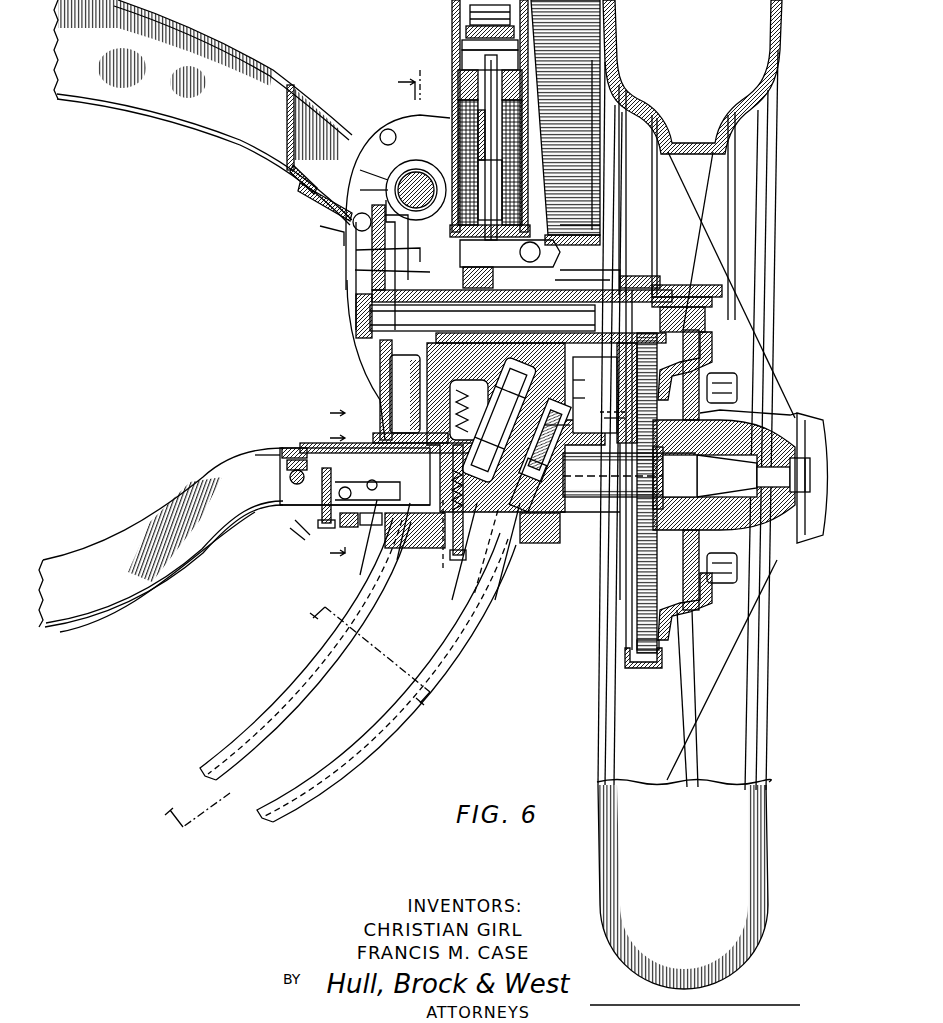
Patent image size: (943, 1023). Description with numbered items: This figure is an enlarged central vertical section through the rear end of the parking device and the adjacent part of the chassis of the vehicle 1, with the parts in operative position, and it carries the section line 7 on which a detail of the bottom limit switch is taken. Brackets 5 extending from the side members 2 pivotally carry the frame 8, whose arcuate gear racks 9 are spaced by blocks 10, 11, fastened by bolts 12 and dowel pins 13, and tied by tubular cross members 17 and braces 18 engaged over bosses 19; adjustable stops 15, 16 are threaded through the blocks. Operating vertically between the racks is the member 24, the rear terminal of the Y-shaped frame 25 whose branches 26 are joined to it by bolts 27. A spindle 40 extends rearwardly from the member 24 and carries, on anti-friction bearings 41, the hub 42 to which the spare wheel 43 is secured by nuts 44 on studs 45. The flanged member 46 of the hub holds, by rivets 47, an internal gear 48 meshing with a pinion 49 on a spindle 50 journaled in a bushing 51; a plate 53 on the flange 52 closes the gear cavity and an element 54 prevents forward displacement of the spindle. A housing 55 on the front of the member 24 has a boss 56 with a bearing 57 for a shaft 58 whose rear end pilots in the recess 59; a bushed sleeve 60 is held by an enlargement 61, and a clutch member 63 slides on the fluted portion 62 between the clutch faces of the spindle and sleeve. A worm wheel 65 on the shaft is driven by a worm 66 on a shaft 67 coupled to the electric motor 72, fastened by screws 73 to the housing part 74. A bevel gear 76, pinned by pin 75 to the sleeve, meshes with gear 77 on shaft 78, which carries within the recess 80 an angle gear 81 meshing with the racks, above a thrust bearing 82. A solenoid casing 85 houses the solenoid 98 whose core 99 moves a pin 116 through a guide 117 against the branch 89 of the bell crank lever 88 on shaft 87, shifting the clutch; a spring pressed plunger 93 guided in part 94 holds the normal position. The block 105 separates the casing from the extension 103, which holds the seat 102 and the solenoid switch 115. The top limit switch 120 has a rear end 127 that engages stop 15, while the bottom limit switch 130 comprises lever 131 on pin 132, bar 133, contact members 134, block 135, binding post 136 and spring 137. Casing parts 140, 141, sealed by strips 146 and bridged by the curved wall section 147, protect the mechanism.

The vehicle 1 is at (78, 103).
The side members of the frame 2 is at (243, 123).
The arms or brackets 5 is at (318, 208).
The part of the housing 74 is at (322, 232).
The electric motor 72 is at (399, 116).
The screws 73 is at (382, 131).
The housing 55 is at (400, 172).
The worm 66 is at (360, 170).
The worm shaft 67 is at (360, 186).
The forwardly extending branch 89 is at (361, 214).
The top limit switch 120 is at (418, 226).
The worm wheel 65 is at (362, 252).
The pin 75 is at (358, 272).
The enlargement 61 is at (372, 294).
The shaft 58 is at (356, 322).
The anti-friction bearing 57 is at (355, 350).
The boss 56 is at (372, 350).
The bushed sleeve 60 is at (395, 375).
The bevel gear 76 is at (385, 405).
The contact members 134 is at (362, 452).
The solenoid 98 is at (458, 110).
The solenoid core 99 is at (485, 152).
The solenoid casing 85 is at (478, 130).
The pin 116 is at (478, 160).
The block 105 is at (462, 62).
The solenoid switch 115 is at (462, 50).
The seat 102 is at (466, 32).
The casing extension 103 is at (470, 18).
The shaft 87 is at (600, 180).
The spring pressed plunger 93 is at (560, 252).
The part 94 is at (545, 268).
The guide 117 is at (600, 178).
The rear end of the frame 127 is at (600, 215).
The bell crank lever 88 is at (600, 268).
The curved wall section 147 is at (600, 280).
The bushed axial recess 59 is at (645, 278).
The spindle 50 is at (690, 286).
The block 10 is at (440, 360).
The shaft 78 is at (499, 420).
The adjustable stop 16 is at (535, 480).
The block 11 is at (520, 510).
The spring 137 is at (450, 502).
The bolts 12 is at (440, 540).
The dowel pins 13 is at (432, 544).
The strips of packing material 146 is at (410, 560).
The thrust bearing 82 is at (575, 505).
The angle gear 81 is at (564, 431).
The fluted portion 62 is at (595, 395).
The clutch member 63 is at (586, 383).
The bevel gear 77 is at (585, 397).
The bushing 51 is at (612, 398).
The tubular cross members 17 is at (614, 408).
The recess 80 is at (629, 475).
The member 24 is at (298, 448).
The bolts 27 is at (290, 488).
The bottom limit switch 130 is at (305, 494).
The block 135 is at (283, 460).
The binding post 136 is at (283, 526).
The bar 133 is at (326, 506).
The lever 131 is at (350, 529).
The pin 132 is at (372, 527).
The Y-shaped frame 25 is at (135, 525).
The forwardly diverging branches 26 is at (113, 597).
The casing part 140 is at (297, 670).
The casing part 141 is at (432, 665).
The frame 8 is at (192, 810).
The section line 7 is at (330, 483).
The gear racks 9 is at (366, 259).
The adjustable stop 15 is at (432, 81).
The spare wheel 43 is at (752, 160).
The braces 18 is at (622, 125).
The bosses 19 is at (628, 155).
The hub 42 is at (760, 415).
The pinion 49 is at (706, 300).
The element 54 is at (705, 318).
The studs 45 is at (702, 345).
The nuts 44 is at (737, 385).
The spindle 40 is at (731, 475).
The anti-friction bearings 41 is at (812, 540).
The flange 52 is at (620, 570).
The plate 53 is at (627, 600).
The internal gear 48 is at (637, 645).
The flanged member 46 is at (648, 668).
The rivets 47 is at (660, 648).